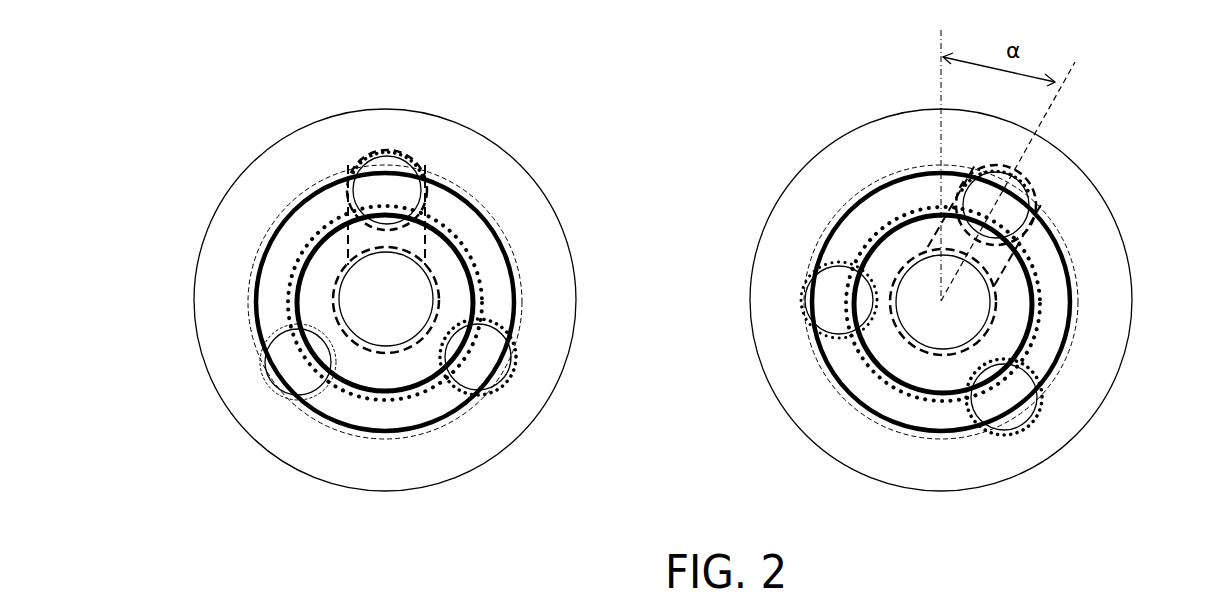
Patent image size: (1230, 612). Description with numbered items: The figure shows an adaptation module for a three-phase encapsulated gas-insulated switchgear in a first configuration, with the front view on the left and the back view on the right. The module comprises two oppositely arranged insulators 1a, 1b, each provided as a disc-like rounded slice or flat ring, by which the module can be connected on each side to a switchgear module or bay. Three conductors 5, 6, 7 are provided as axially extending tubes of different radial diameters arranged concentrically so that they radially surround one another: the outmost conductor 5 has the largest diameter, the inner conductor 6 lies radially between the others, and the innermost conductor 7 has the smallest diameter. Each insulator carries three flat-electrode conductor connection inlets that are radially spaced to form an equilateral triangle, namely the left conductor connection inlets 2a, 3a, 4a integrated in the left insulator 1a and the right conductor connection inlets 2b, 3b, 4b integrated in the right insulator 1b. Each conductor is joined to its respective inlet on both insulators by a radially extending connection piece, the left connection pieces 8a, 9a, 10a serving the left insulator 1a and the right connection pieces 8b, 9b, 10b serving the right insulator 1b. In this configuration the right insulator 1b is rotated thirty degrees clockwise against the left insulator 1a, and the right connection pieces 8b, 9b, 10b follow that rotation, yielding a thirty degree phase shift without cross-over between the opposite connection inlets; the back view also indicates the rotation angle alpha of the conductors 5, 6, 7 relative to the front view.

The left insulator 1a is at (573, 343).
The right insulator 1b is at (1130, 347).
The left conductor connection inlet 2a is at (398, 160).
The right conductor connection inlet 2b is at (1020, 177).
The left conductor connection inlet 3a is at (515, 372).
The right conductor connection inlet 3b is at (1040, 400).
The left conductor connection inlet 4a is at (268, 388).
The right conductor connection inlet 4b is at (800, 315).
The outmost conductor 5 is at (453, 183).
The inner conductor 6 is at (453, 228).
The innermost conductor 7 is at (430, 282).
The left connection piece 8a is at (430, 273).
The right connection piece 8b is at (1013, 232).
The left connection piece 9a is at (480, 287).
The right connection piece 9b is at (1038, 328).
The left connection piece 10a is at (473, 415).
The right connection piece 10b is at (976, 438).